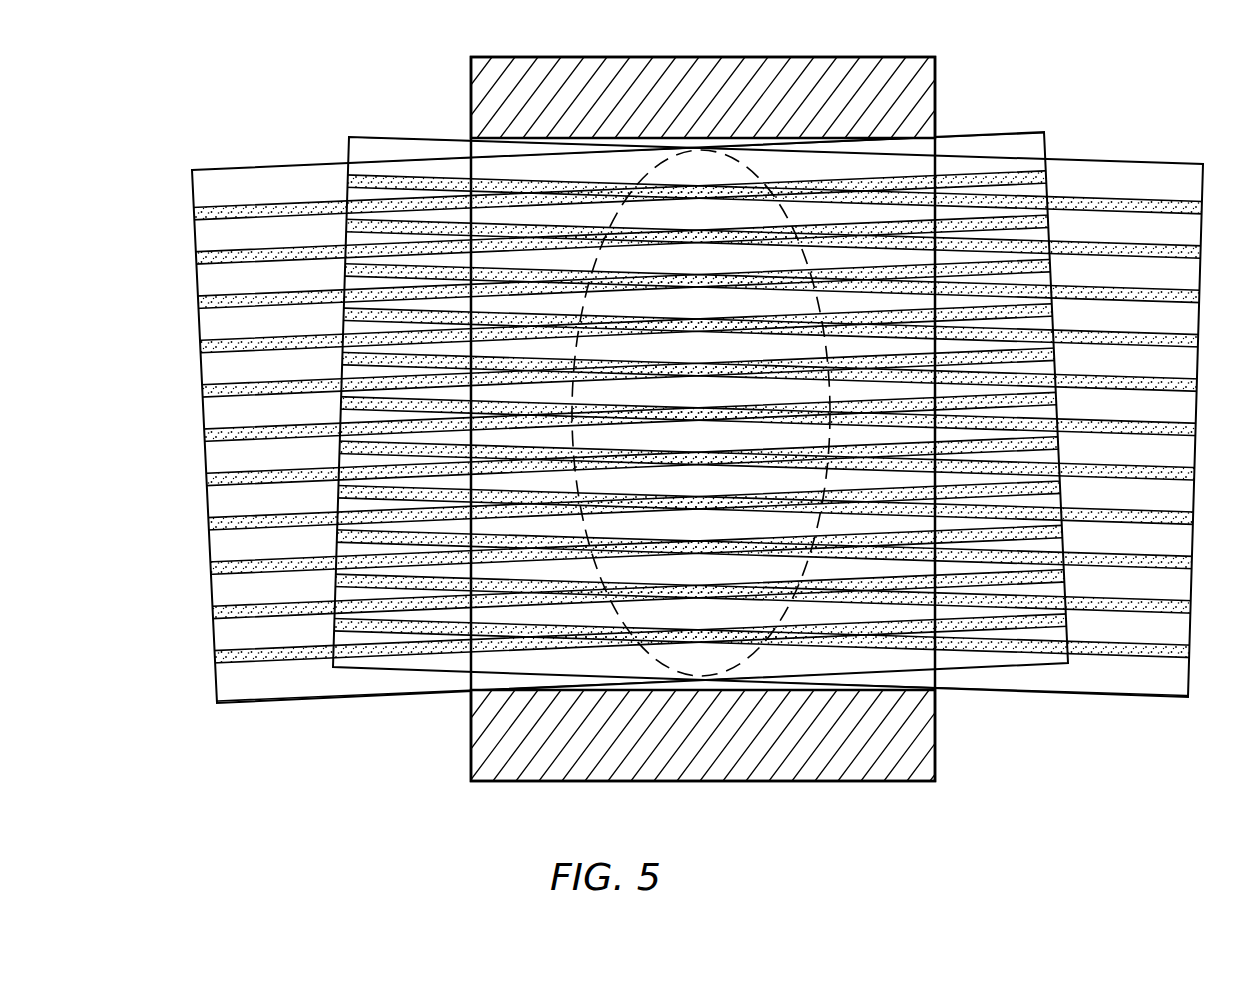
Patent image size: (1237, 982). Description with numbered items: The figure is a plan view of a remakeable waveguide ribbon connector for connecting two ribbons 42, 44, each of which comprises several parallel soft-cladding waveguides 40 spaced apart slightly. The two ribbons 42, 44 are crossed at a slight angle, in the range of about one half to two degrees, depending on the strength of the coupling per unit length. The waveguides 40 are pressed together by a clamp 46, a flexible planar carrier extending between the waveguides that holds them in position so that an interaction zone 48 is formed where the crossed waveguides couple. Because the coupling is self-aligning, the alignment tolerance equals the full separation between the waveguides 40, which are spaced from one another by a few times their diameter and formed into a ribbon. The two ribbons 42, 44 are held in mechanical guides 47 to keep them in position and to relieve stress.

The soft-cladding waveguides 40 is at (988, 615).
The ribbon 42 is at (1140, 158).
The ribbon 44 is at (260, 167).
The clamp 46 is at (905, 797).
The mechanical guides 47 is at (893, 93).
The interaction zone 48 is at (751, 656).